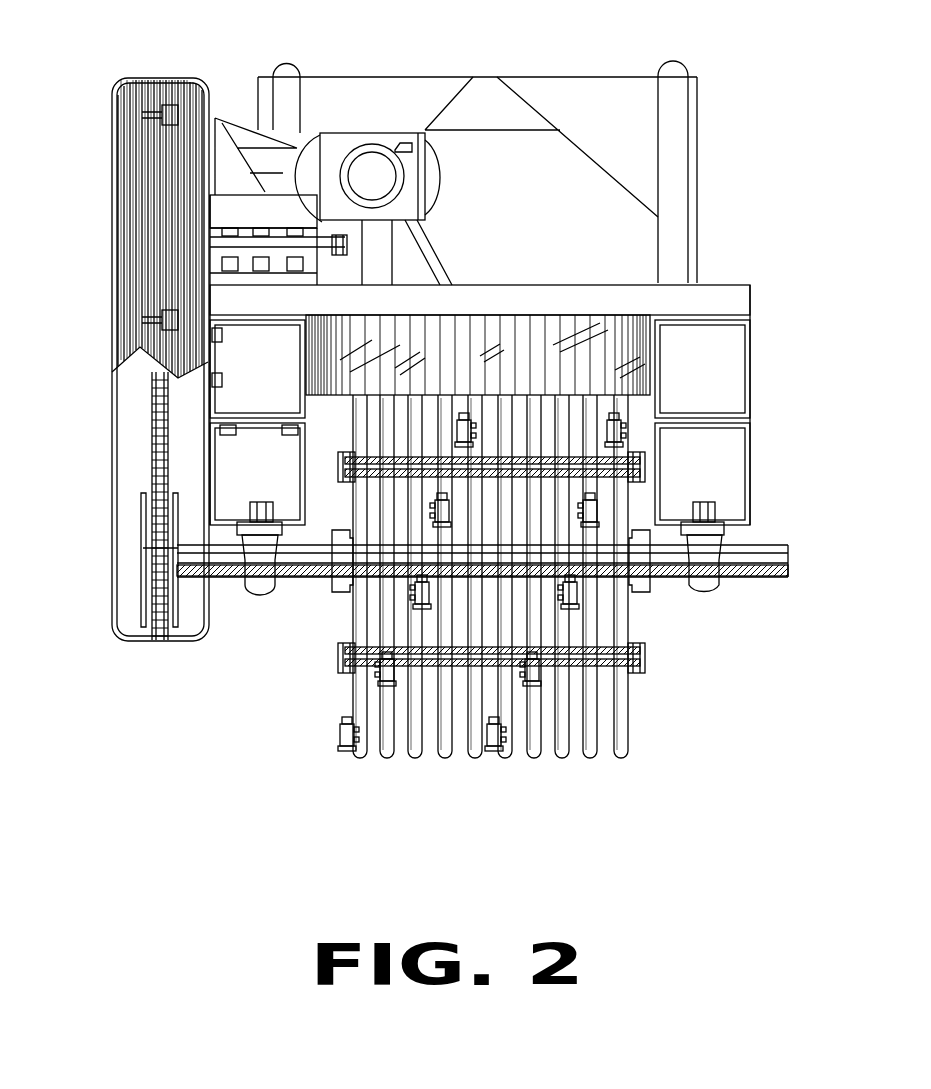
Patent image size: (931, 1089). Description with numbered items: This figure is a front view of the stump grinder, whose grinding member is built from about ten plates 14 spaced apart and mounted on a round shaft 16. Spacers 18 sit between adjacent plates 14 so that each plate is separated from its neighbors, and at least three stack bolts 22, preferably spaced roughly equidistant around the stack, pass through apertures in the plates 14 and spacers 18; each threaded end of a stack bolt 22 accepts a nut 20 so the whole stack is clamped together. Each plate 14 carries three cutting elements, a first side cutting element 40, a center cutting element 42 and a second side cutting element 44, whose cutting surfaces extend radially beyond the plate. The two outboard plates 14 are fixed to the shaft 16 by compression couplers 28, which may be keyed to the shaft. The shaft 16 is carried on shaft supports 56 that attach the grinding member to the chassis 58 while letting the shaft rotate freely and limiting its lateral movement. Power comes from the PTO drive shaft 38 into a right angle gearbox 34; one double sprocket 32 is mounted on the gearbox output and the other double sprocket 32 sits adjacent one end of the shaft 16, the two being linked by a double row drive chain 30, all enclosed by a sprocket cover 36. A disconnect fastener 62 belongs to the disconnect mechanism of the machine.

The plate 14 is at (572, 763).
The shaft 16 is at (751, 570).
The spacers 18 is at (370, 668).
The nut 20 is at (340, 656).
The stack bolt 22 is at (352, 636).
The compression coupler 28 is at (638, 573).
The double row drive chain 30 is at (162, 613).
The double sprocket 32 is at (143, 549).
The right angle gearbox 34 is at (365, 133).
The sprocket cover 36 is at (152, 76).
The PTO drive shaft 38 is at (385, 262).
The first side cutting element 40 is at (330, 745).
The center cutting element 42 is at (384, 698).
The second side cutting element 44 is at (430, 668).
The shaft support 56 is at (698, 565).
The chassis 58 is at (210, 392).
The disconnect fastener 62 is at (166, 320).